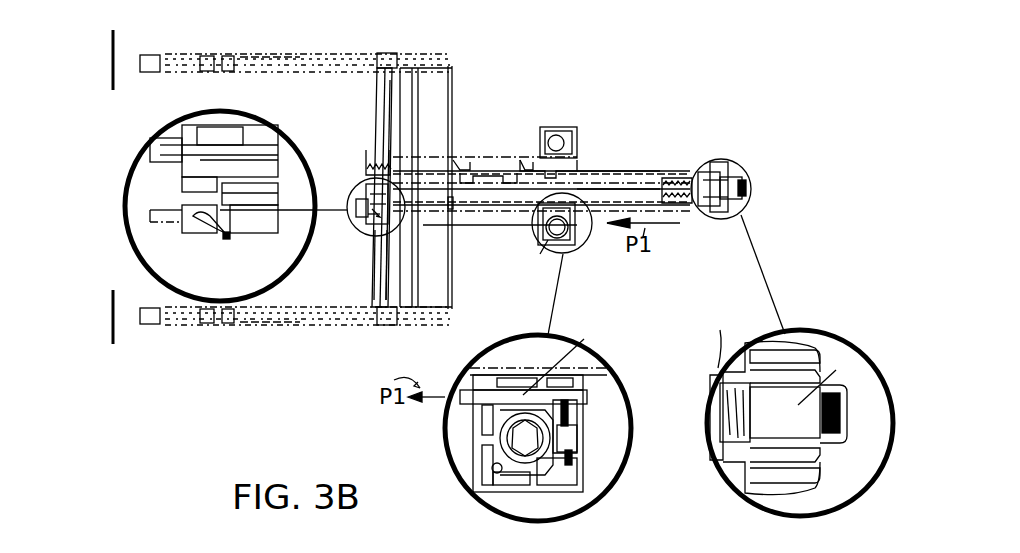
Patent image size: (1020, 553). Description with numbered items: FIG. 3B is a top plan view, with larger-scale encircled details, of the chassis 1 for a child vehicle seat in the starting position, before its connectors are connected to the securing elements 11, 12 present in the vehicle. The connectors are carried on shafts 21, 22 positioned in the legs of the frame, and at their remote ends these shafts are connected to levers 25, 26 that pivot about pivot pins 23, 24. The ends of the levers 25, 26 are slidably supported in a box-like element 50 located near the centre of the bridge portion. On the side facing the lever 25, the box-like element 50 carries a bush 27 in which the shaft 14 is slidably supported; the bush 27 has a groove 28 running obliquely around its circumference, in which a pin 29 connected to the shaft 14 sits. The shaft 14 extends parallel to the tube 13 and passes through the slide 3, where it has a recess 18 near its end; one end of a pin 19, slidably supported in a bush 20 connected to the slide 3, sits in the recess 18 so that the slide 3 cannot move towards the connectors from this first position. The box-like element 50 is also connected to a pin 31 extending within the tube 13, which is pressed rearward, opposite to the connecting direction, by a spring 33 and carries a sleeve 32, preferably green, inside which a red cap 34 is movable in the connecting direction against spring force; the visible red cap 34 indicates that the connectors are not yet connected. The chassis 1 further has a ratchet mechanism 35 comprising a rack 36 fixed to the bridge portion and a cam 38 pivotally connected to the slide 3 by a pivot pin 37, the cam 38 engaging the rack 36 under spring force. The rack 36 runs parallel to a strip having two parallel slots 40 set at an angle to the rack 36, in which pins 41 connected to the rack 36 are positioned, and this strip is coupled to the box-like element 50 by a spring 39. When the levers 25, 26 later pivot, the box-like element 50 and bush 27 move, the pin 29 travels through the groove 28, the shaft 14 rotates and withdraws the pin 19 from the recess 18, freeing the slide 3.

The chassis 1 is at (622, 81).
The slide 3 is at (567, 150).
The securing element 11 is at (112, 320).
The securing element 12 is at (112, 58).
The tube 13 is at (637, 187).
The shaft 14 is at (477, 213).
The recess 18 is at (570, 408).
The pin 19 is at (562, 440).
The bush 20 is at (567, 437).
The shaft 21 is at (280, 320).
The shaft 22 is at (285, 62).
The pivot pin 23 is at (382, 279).
The pivot pin 24 is at (383, 102).
The lever 25 is at (380, 259).
The lever 26 is at (381, 118).
The bush 27 is at (258, 225).
The groove 28 is at (198, 225).
The pin 29 is at (226, 241).
The pin 31 is at (687, 170).
The sleeve 32 is at (724, 177).
The spring 33 is at (701, 176).
The cap 34 is at (843, 420).
The ratchet mechanism 35 is at (506, 105).
The rack 36 is at (512, 165).
The pivot pin 37 is at (554, 140).
The cam 38 is at (617, 172).
The spring 39 is at (376, 160).
The slot 40 is at (466, 168).
The pin 41 is at (462, 160).
The box-like element 50 is at (362, 193).